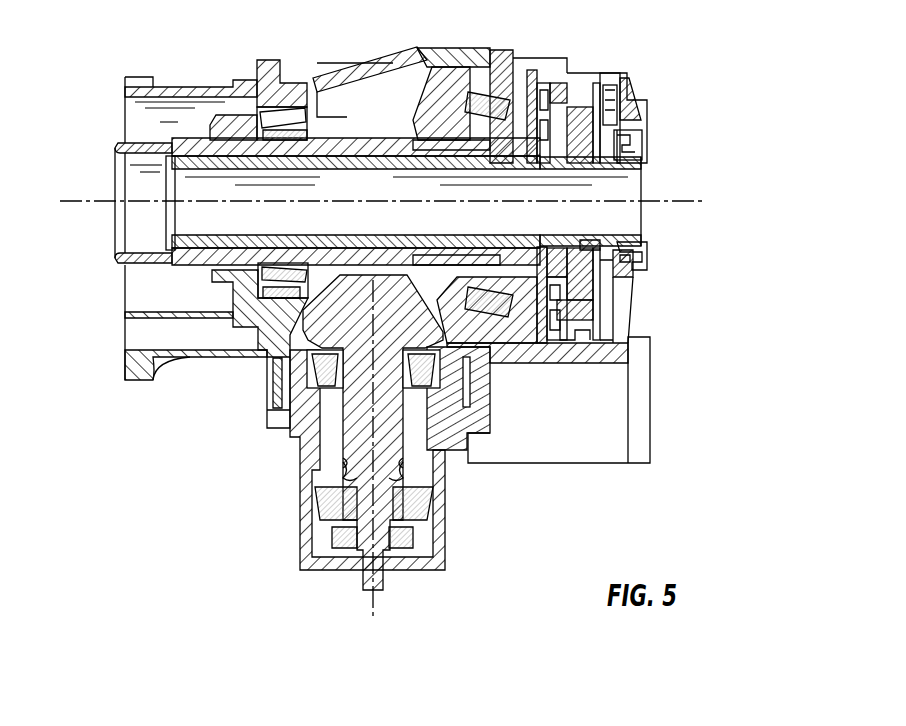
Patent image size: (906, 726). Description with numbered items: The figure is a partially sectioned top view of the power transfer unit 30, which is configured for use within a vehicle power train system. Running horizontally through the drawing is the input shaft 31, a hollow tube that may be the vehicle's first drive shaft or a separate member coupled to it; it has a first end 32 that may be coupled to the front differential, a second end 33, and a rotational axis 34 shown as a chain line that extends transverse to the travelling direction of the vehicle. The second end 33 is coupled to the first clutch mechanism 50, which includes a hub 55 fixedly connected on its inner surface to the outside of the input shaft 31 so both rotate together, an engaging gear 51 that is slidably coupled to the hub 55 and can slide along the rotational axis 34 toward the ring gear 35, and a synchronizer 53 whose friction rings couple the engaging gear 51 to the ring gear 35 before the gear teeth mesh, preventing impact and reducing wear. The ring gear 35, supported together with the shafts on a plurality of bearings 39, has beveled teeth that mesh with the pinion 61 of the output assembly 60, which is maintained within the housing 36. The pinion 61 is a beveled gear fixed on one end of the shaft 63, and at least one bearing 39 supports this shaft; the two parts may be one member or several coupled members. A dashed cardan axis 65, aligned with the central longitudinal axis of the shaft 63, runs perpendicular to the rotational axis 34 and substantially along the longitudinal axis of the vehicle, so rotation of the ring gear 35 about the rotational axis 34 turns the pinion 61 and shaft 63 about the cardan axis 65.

The power transfer unit 30 is at (86, 352).
The input shaft 31 is at (382, 197).
The first end 32 is at (183, 162).
The second end 33 is at (592, 238).
The rotational axis 34 is at (657, 200).
The ring gear 35 is at (392, 63).
The housing 36 is at (247, 87).
The bearings 39 is at (423, 383).
The first clutch mechanism 50 is at (610, 295).
The engaging gear 51 is at (585, 85).
The synchronizer 53 is at (543, 100).
The hub 55 is at (643, 263).
The output assembly 60 is at (330, 427).
The pinion 61 is at (362, 332).
The shaft 63 is at (393, 437).
The cardan axis 65 is at (368, 603).